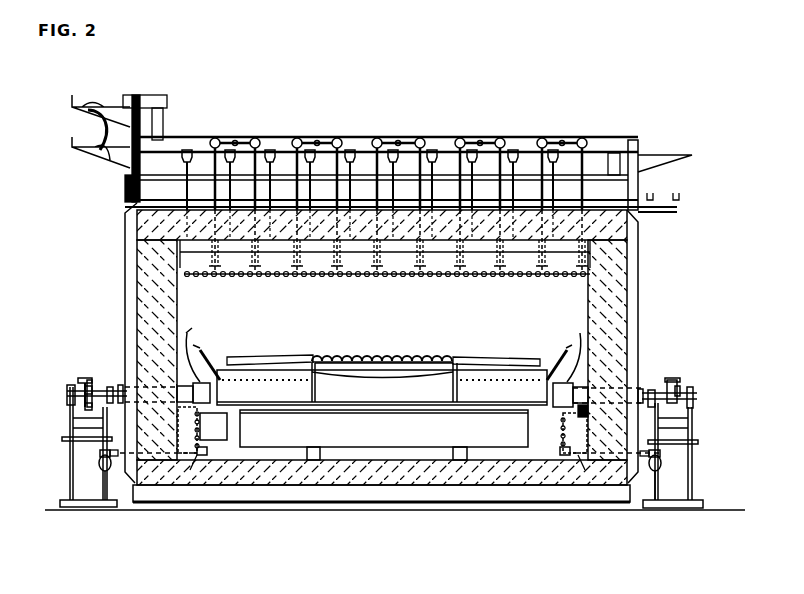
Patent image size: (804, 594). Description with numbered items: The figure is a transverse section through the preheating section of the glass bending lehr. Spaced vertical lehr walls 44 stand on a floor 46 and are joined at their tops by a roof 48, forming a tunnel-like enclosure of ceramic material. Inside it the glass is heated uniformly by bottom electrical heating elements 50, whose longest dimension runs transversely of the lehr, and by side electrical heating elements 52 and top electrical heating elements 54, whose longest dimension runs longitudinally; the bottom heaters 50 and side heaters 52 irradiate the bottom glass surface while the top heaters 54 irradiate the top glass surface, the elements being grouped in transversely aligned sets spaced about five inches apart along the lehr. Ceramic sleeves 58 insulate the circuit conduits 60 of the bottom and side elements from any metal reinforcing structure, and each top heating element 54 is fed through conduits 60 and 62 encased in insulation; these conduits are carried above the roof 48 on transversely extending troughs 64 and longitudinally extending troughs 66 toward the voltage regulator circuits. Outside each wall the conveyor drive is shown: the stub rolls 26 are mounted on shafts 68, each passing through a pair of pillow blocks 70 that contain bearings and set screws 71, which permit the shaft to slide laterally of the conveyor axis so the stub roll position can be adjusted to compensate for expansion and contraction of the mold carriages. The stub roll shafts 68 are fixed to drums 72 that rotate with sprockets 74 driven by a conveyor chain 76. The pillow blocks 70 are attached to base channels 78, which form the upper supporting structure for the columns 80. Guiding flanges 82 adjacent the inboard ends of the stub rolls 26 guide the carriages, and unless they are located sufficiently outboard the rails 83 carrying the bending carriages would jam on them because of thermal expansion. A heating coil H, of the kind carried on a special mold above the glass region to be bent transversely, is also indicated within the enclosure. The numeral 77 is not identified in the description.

The stub rolls 26 is at (212, 392).
The lehr walls 44 is at (178, 313).
The floor 46 is at (435, 458).
The roof 48 is at (565, 220).
The bottom electrical heating elements 50 is at (384, 428).
The side electrical heating elements 52 is at (205, 437).
The top electrical heating elements 54 is at (330, 278).
The ceramic sleeves 58 is at (200, 457).
The circuit conduits 60 is at (213, 452).
The conduits 62 is at (217, 165).
The transversely extending troughs 64 is at (173, 140).
The longitudinally extending troughs 66 is at (72, 147).
The shafts 68 is at (108, 389).
The pillow blocks 70 is at (67, 388).
The set screws 71 is at (67, 398).
The drums 72 is at (85, 388).
The sprockets 74 is at (85, 378).
The conveyor chain 76 is at (88, 409).
The pin 77 is at (85, 381).
The base channels 78 is at (693, 430).
The columns 80 is at (692, 465).
The guiding flanges 82 is at (578, 340).
The rails 83 is at (200, 330).
The heating coils H is at (395, 360).